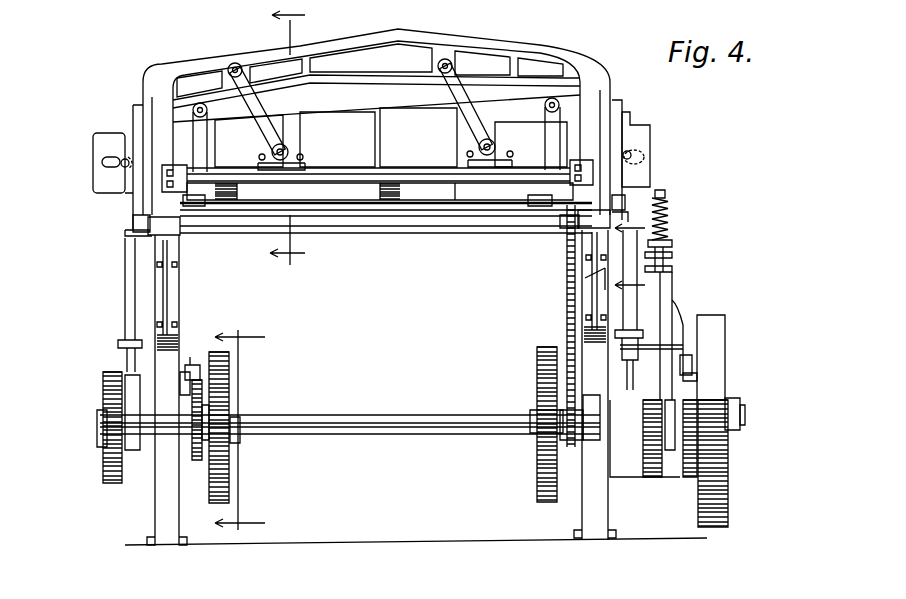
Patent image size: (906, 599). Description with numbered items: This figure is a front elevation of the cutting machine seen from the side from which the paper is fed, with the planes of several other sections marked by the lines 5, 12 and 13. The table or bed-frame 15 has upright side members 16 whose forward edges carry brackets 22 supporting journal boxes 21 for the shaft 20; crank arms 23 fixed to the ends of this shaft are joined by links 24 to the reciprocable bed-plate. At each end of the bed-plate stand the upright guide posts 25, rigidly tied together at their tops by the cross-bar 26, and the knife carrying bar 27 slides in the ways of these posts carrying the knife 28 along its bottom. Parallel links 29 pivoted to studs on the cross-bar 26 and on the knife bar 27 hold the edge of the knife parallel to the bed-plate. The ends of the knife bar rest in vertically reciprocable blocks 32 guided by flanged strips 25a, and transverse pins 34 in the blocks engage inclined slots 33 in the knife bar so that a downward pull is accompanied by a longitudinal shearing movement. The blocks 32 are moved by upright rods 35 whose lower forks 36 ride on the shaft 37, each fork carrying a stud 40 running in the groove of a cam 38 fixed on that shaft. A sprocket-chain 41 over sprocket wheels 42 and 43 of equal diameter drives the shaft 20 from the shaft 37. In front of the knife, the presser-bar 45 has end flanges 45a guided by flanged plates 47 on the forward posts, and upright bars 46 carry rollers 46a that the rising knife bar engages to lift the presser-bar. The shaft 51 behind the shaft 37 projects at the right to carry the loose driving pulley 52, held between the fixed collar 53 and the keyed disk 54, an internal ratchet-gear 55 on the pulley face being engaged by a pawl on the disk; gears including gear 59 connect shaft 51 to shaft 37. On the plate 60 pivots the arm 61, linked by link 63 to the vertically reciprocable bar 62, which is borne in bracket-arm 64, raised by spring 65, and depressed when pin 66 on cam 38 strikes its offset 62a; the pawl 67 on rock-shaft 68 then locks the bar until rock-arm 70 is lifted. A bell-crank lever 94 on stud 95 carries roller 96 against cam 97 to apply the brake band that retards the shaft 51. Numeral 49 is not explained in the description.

The section line 5— 5 is at (278, 141).
The section line 12— 12 is at (240, 429).
The section line 13— 13 is at (635, 259).
The table or bed-frame 15 is at (386, 286).
The upright side member 16 is at (180, 340).
The shaft 20 is at (378, 234).
The journal box 21 is at (160, 228).
The bracket 22 is at (172, 275).
The crank arm 23 is at (133, 235).
The link 24 is at (135, 222).
The upright guide post 25 is at (378, 115).
The flanged strip 25a is at (622, 85).
The cross-bar or beam 26 is at (385, 33).
The knife carrying bar or frame 27 is at (344, 107).
The knife or blade 28 is at (387, 175).
The parallel link 29 is at (255, 98).
The vertically reciprocable block 32 is at (118, 205).
The inclined slot 33 is at (102, 162).
The transverse pin 34 is at (122, 165).
The upright rod 35 is at (125, 283).
The fork 36 is at (97, 411).
The shaft 37 is at (390, 416).
The cam 38 is at (103, 458).
The pin or stud 40 is at (125, 392).
The sprocket-chain 41 is at (566, 262).
The sprocket wheel 42 is at (533, 440).
The sprocket wheel 43 is at (563, 225).
The presser-bar 45 is at (348, 168).
The vertically extending flange 45a is at (186, 204).
The upright bar 46 is at (208, 147).
The roller 46a is at (376, 101).
The flanged plate 47 is at (166, 165).
The strut pin 49 is at (292, 158).
The shaft 51 is at (745, 414).
The main driving pulley 52 is at (712, 320).
The fixed collar 53 is at (740, 402).
The disk 54 is at (697, 450).
The internal ratchet-gear 55 is at (697, 377).
The gear 59 is at (230, 470).
The plate 60 is at (684, 348).
The arm 61 is at (690, 364).
The vertically reciprocable bar 62 is at (672, 290).
The horizontal offset 62a is at (700, 470).
The link 63 is at (680, 322).
The bracket-arm 64 is at (672, 243).
The coiled expansion spring 65 is at (670, 212).
The pin or stud 66 is at (690, 410).
The spring controlled pawl 67 is at (672, 255).
The rock-shaft 68 is at (672, 270).
The rock-arm 70 is at (590, 283).
The bell-crank lever 94 is at (182, 378).
The stud 95 is at (198, 362).
The roller 96 is at (204, 385).
The cam 97 is at (236, 420).